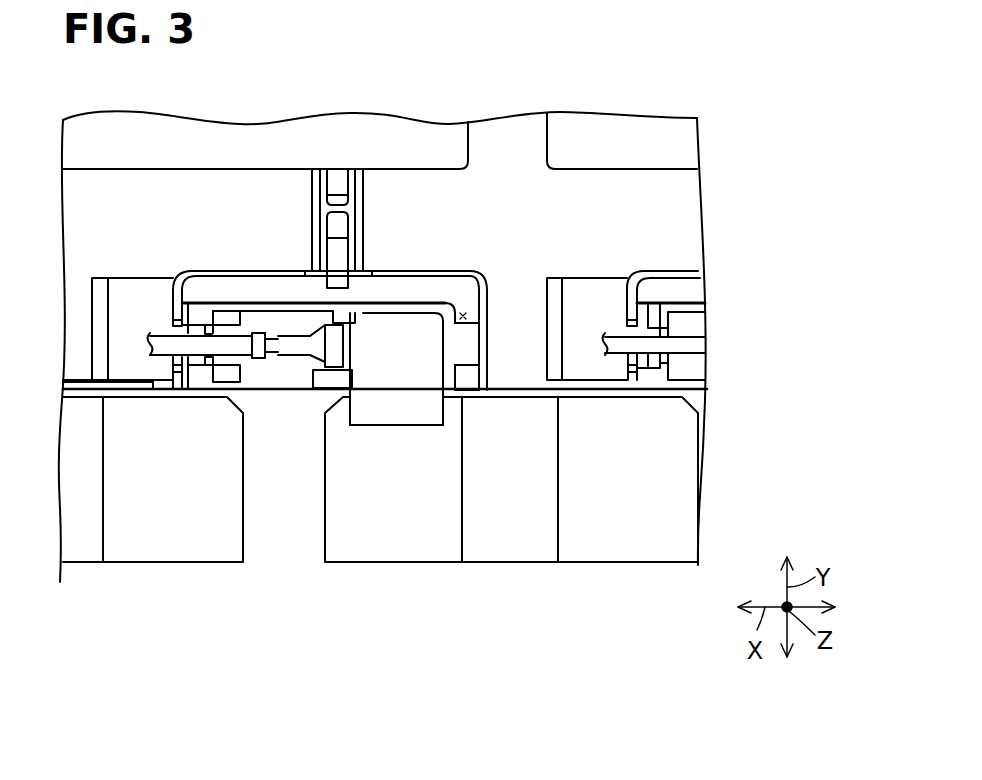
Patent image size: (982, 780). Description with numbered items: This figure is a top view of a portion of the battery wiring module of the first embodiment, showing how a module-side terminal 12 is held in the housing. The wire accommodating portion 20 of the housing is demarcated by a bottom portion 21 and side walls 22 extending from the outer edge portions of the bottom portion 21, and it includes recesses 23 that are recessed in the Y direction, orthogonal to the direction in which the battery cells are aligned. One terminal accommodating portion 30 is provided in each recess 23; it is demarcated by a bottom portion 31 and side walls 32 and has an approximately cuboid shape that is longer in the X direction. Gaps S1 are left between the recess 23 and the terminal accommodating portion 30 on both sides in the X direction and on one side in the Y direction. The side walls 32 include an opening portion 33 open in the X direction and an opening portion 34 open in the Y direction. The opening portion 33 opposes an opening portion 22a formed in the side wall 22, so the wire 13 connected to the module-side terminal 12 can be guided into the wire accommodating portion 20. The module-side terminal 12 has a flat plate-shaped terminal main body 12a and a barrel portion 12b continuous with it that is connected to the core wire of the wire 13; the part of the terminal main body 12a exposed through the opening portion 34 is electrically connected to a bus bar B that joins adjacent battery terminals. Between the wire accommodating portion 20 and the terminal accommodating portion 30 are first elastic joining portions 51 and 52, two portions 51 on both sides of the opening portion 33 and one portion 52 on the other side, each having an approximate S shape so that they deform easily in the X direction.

The wire accommodating portion 20 is at (692, 175).
The bottom portion 21 is at (692, 200).
The side walls 22 is at (463, 273).
The opening portion 22a is at (172, 362).
The recesses 23 is at (432, 285).
The terminal accommodating portion 30 is at (285, 305).
The bottom portions 31 is at (243, 322).
The side walls 32 is at (387, 308).
The opening portion 33 is at (232, 358).
The opening portion 34 is at (440, 385).
The wire 13 is at (160, 332).
The first elastic joining portions 51 is at (203, 300).
The first elastic joining portion 52 is at (478, 345).
The gaps S1 is at (470, 316).
The module-side terminal 12 is at (373, 422).
The terminal main body 12a is at (393, 426).
The barrel portion 12b is at (288, 355).
The bus bars B is at (163, 550).